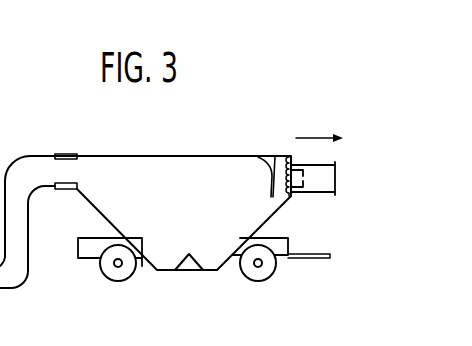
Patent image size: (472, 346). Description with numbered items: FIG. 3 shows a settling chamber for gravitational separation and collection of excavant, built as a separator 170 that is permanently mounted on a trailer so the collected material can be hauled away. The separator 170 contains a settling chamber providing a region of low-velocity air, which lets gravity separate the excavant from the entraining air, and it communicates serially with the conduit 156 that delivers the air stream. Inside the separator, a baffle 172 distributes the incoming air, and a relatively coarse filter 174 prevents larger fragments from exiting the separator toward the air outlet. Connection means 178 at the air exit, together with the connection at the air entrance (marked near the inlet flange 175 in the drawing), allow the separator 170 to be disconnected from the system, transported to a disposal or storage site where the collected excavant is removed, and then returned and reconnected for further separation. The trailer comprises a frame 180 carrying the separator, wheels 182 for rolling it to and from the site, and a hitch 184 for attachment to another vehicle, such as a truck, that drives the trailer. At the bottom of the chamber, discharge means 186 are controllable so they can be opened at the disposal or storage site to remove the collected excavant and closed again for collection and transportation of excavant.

The conduit 156 is at (327, 173).
The separator 170 is at (203, 107).
The baffle 172 is at (262, 170).
The coarse filter 174 is at (275, 156).
The inlet flange 175 is at (64, 152).
The connection means 178 is at (293, 196).
The frame 180 is at (90, 252).
The wheels 182 is at (114, 281).
The hitch 184 is at (330, 266).
The discharge means 186 is at (206, 271).